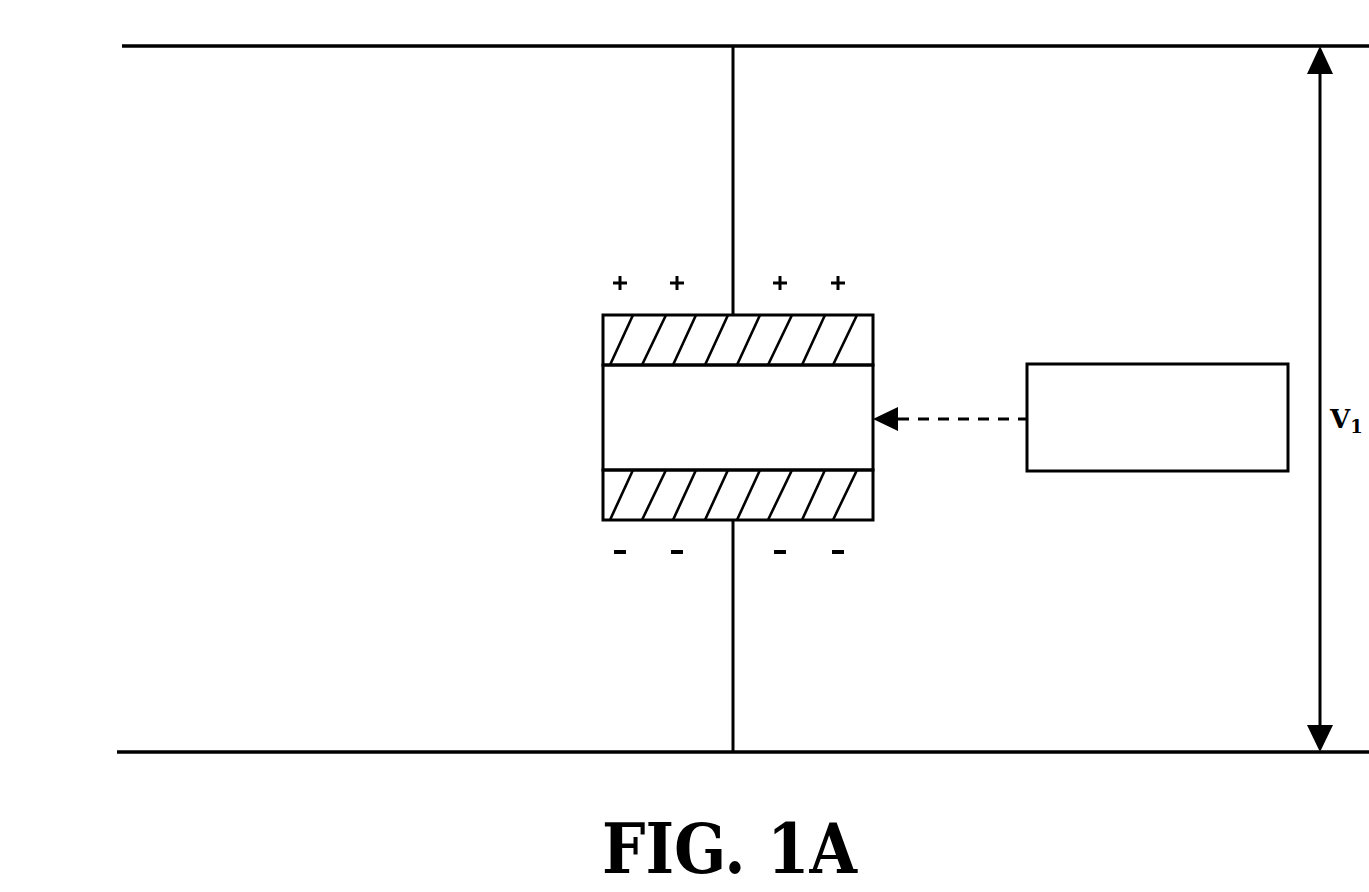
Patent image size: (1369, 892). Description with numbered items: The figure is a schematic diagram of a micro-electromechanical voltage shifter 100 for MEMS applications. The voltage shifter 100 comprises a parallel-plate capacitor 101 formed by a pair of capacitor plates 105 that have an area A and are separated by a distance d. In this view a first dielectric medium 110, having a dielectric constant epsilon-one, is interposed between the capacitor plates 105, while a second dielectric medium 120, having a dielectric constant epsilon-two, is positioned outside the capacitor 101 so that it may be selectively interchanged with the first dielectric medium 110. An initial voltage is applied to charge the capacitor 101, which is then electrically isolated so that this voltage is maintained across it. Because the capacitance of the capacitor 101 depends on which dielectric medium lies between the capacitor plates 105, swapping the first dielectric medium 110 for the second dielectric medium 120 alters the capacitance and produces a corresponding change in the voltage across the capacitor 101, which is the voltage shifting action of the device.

The micro-electromechanical voltage shifter 100 is at (178, 797).
The parallel-plate capacitor 101 is at (750, 393).
The capacitor plates 105 is at (603, 341).
The first dielectric medium 110 is at (603, 415).
The second dielectric medium 120 is at (1146, 364).